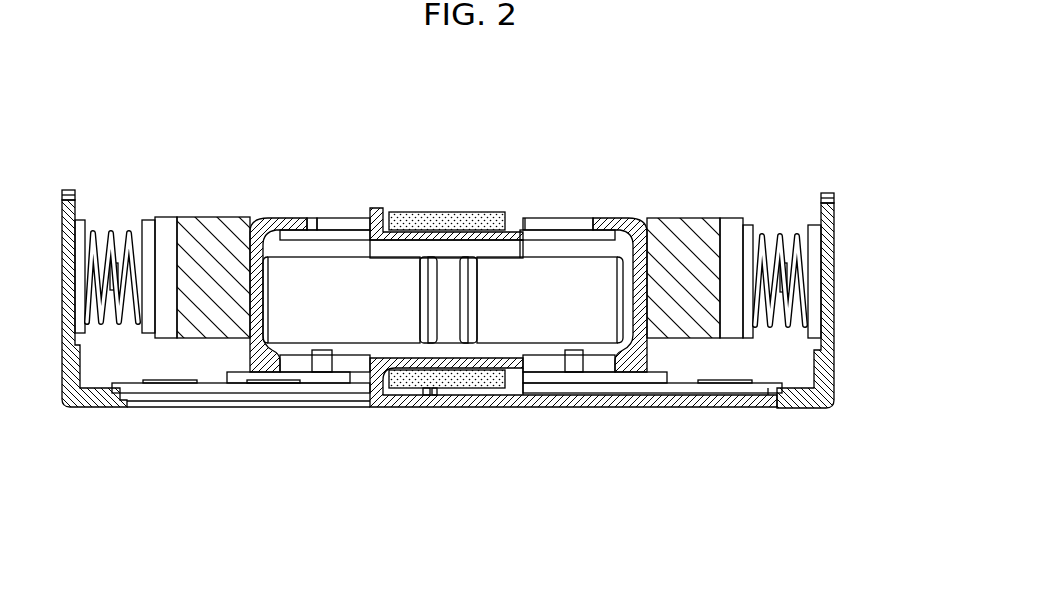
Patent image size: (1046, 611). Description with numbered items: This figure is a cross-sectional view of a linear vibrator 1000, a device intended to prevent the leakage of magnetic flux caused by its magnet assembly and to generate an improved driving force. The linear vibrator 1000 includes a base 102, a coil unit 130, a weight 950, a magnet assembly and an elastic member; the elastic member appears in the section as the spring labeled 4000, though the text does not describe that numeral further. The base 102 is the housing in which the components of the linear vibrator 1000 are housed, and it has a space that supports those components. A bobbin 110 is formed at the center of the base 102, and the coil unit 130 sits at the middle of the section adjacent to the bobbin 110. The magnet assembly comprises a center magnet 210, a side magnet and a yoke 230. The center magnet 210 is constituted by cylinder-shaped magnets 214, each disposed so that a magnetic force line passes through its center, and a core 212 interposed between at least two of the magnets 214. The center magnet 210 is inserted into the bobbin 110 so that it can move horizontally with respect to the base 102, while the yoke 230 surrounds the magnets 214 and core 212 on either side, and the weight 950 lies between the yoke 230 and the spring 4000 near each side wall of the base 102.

The linear vibrator 1000 is at (757, 165).
The base 102 is at (830, 388).
The spring 4000 is at (123, 212).
The weight 950 is at (220, 227).
The bobbin 110 is at (403, 212).
The coil unit 130 is at (488, 213).
The center magnet 210 is at (615, 518).
The core 212 is at (448, 337).
The cylinder-shaped magnet 214 is at (355, 337).
The yoke 230 is at (637, 360).